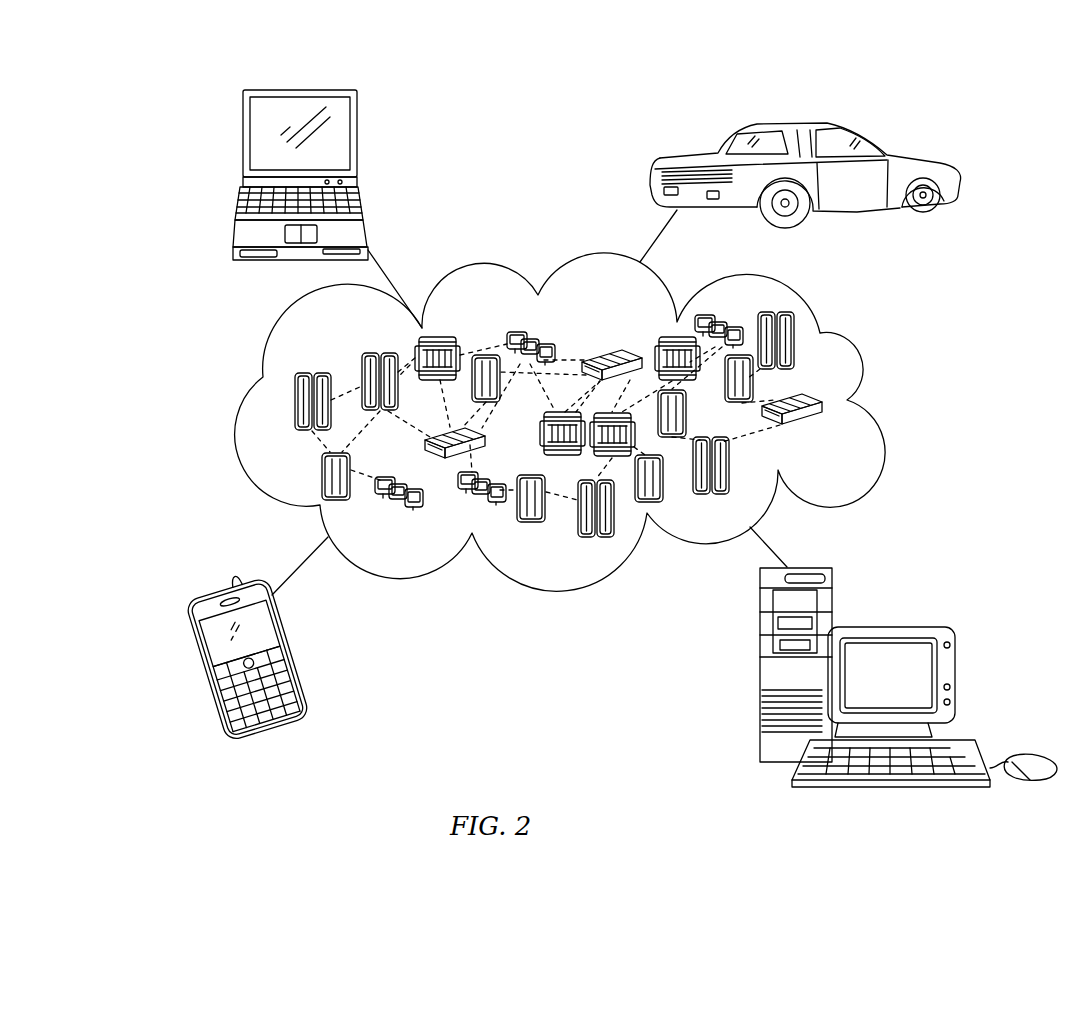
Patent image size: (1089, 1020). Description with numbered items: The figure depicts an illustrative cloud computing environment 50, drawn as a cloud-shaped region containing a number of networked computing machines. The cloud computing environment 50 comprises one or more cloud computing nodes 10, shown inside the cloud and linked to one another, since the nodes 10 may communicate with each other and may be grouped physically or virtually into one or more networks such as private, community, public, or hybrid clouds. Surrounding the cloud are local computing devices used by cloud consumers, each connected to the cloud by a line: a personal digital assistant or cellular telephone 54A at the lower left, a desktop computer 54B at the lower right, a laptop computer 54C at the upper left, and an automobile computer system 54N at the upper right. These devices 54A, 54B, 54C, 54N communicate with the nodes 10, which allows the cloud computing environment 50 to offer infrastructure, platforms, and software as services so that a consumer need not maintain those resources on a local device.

The cloud computing environment 50 is at (855, 344).
The cloud computing nodes 10 is at (845, 455).
The personal digital assistant or cellular telephone 54A is at (200, 663).
The desktop computer 54B is at (905, 627).
The laptop computer 54C is at (268, 90).
The automobile computer system 54N is at (860, 135).